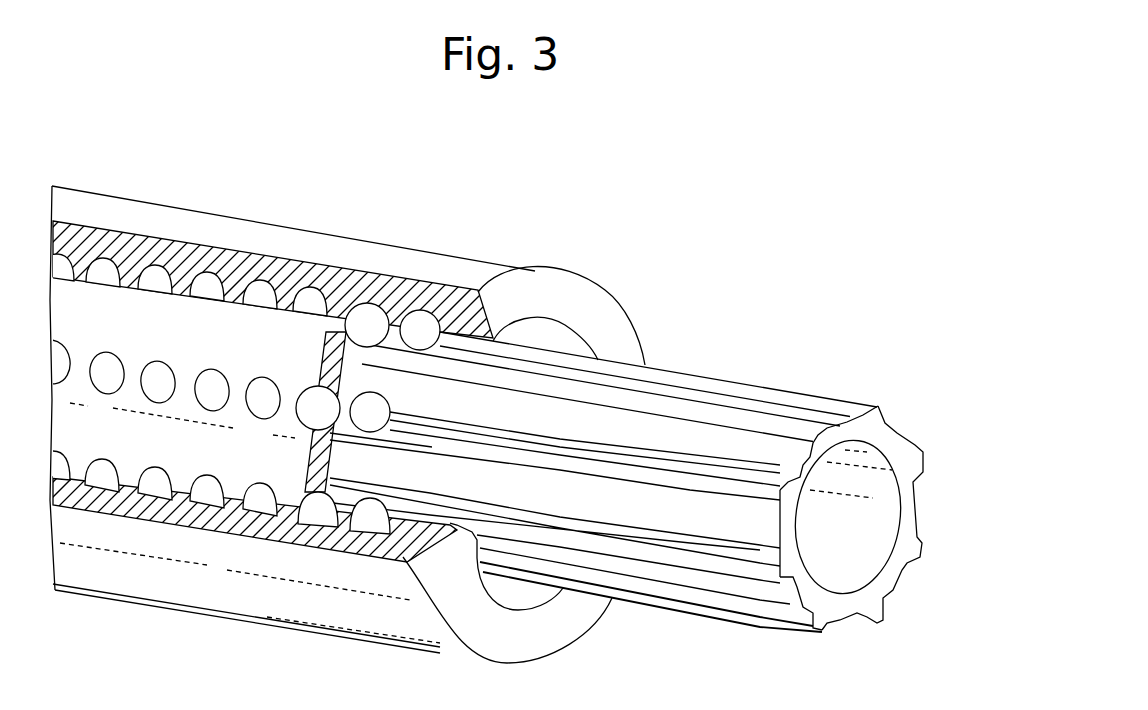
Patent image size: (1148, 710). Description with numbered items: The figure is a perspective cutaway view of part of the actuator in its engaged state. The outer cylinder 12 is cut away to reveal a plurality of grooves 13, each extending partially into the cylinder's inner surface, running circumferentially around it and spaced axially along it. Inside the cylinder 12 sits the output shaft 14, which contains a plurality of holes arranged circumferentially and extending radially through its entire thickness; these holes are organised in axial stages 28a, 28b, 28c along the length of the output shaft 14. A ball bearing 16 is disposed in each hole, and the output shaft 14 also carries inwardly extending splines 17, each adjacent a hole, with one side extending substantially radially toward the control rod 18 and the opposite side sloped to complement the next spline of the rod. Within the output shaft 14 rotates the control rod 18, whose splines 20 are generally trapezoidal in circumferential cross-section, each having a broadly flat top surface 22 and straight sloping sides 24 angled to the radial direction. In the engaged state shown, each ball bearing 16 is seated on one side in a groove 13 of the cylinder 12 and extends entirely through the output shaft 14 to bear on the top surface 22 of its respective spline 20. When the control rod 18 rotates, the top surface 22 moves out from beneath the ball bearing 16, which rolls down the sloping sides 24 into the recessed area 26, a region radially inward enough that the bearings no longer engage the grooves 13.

The cylinder 12 is at (492, 270).
The groove 13 is at (358, 308).
The output shaft 14 is at (288, 317).
The ball bearing 16 is at (205, 285).
The spline 17 is at (350, 348).
The control rod 18 is at (875, 435).
The spline 20 is at (823, 422).
The top surface 22 is at (763, 480).
The sloping sides 24 is at (748, 495).
The recessed area 26 is at (685, 522).
The stage 28a is at (396, 156).
The stage 28b is at (327, 136).
The stage 28c is at (259, 134).